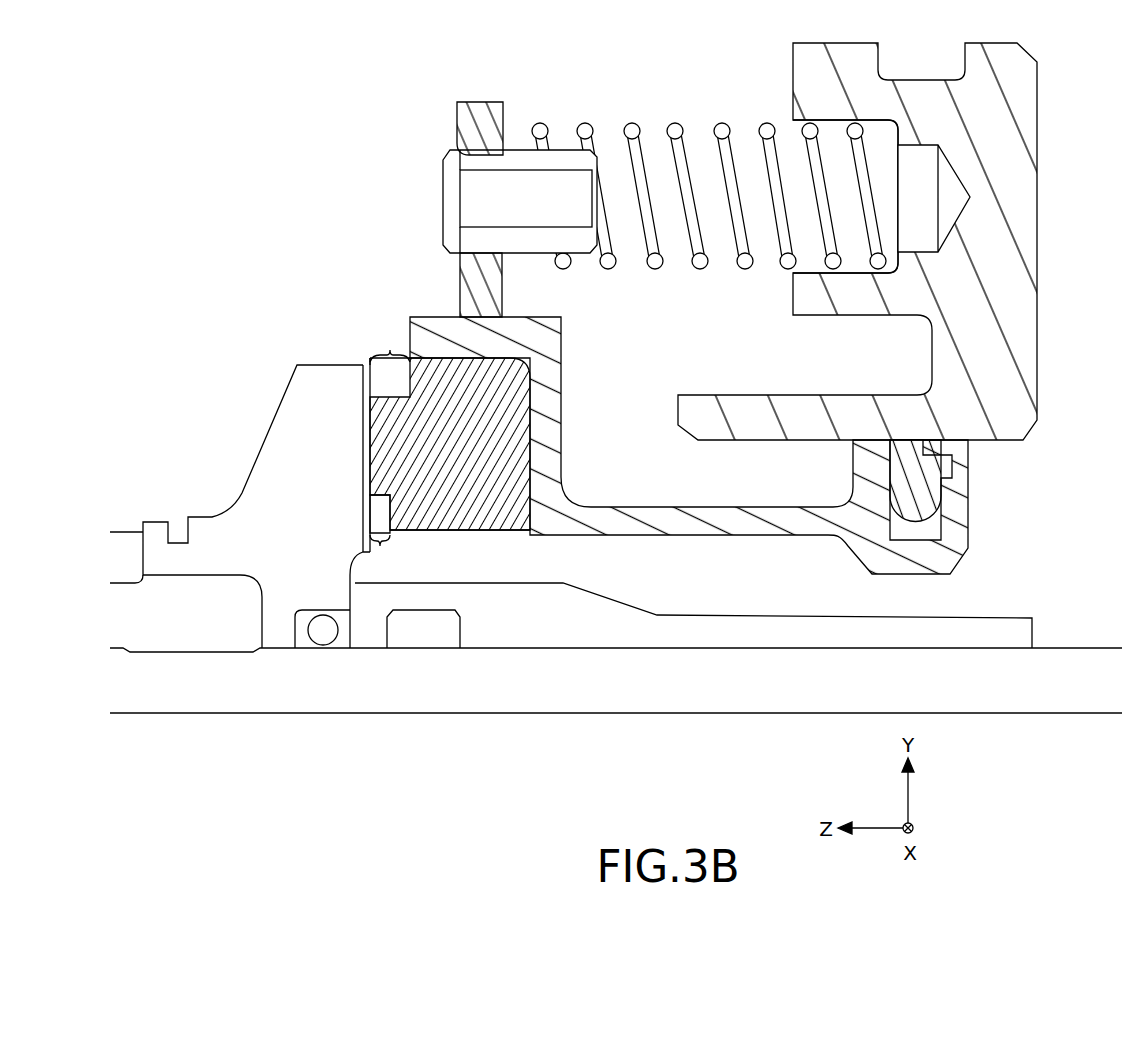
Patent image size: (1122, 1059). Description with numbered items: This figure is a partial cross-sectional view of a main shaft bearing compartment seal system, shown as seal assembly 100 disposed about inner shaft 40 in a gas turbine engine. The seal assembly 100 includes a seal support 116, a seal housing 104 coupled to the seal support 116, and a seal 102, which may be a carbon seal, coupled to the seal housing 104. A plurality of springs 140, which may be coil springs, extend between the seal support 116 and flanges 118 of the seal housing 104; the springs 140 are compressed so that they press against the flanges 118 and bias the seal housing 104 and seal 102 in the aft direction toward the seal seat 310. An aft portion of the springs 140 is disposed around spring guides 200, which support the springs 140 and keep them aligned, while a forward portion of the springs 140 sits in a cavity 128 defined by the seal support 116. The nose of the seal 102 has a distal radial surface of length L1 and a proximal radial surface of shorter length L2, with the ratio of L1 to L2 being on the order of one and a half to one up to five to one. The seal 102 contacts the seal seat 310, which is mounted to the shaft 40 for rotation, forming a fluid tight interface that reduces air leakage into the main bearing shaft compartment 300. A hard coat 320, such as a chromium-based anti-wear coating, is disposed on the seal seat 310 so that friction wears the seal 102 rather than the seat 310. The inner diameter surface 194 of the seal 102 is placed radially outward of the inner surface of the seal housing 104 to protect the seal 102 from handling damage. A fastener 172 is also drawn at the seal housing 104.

The seal assembly 100 is at (352, 92).
The seal 102 is at (532, 400).
The seal housing 104 is at (608, 505).
The seal support 116 is at (1033, 172).
The flanges 118 is at (470, 128).
The cavity 128 is at (882, 128).
The springs 140 is at (675, 126).
The fastener 172 is at (925, 480).
The inner diameter surface 194 is at (480, 530).
The spring guides 200 is at (450, 195).
The main bearing shaft compartment 300 is at (240, 503).
The seal seat 310 is at (300, 480).
The hard coat 320 is at (366, 462).
The inner shaft 40 is at (469, 685).
The length of distal radial surface L1 is at (390, 344).
The length of proximal radial surface L2 is at (384, 535).